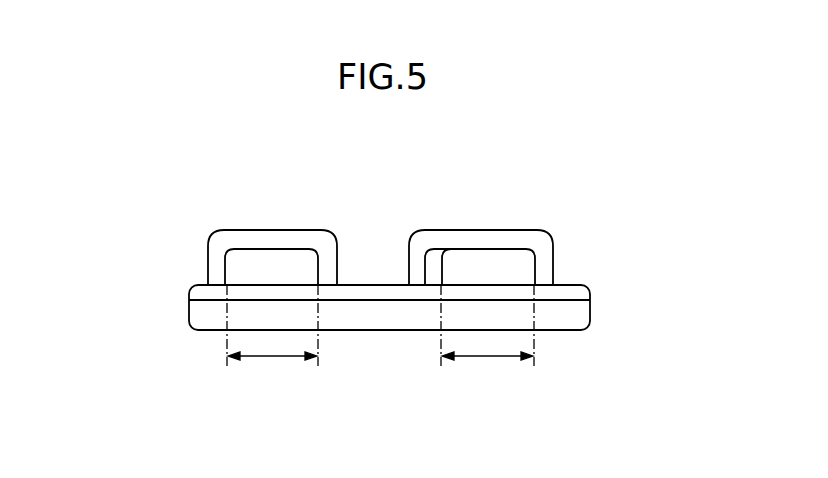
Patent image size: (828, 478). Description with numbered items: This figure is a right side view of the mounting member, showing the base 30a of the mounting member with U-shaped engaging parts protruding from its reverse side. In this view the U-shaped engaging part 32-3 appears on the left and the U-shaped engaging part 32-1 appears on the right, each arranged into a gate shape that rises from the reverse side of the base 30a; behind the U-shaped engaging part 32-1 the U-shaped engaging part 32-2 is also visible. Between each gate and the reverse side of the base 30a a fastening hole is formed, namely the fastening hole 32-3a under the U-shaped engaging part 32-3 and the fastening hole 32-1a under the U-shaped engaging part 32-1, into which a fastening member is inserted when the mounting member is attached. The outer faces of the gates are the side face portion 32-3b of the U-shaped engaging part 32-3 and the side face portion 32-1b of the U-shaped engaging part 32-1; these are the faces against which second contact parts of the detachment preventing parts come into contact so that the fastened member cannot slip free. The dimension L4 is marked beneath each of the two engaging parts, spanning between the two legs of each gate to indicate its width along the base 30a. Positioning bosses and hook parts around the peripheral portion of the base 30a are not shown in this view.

The base 30a is at (386, 318).
The U-shaped engaging part 32-1 is at (435, 222).
The fastening hole 32-1a is at (518, 268).
The side face portion 32-1b is at (507, 240).
The U-shaped engaging part 32-2 is at (442, 273).
The U-shaped engaging part 32-3 is at (275, 222).
The fastening hole 32-3a is at (240, 268).
The side face portion 32-3b is at (292, 240).
The length L4 of projection L4 is at (380, 367).